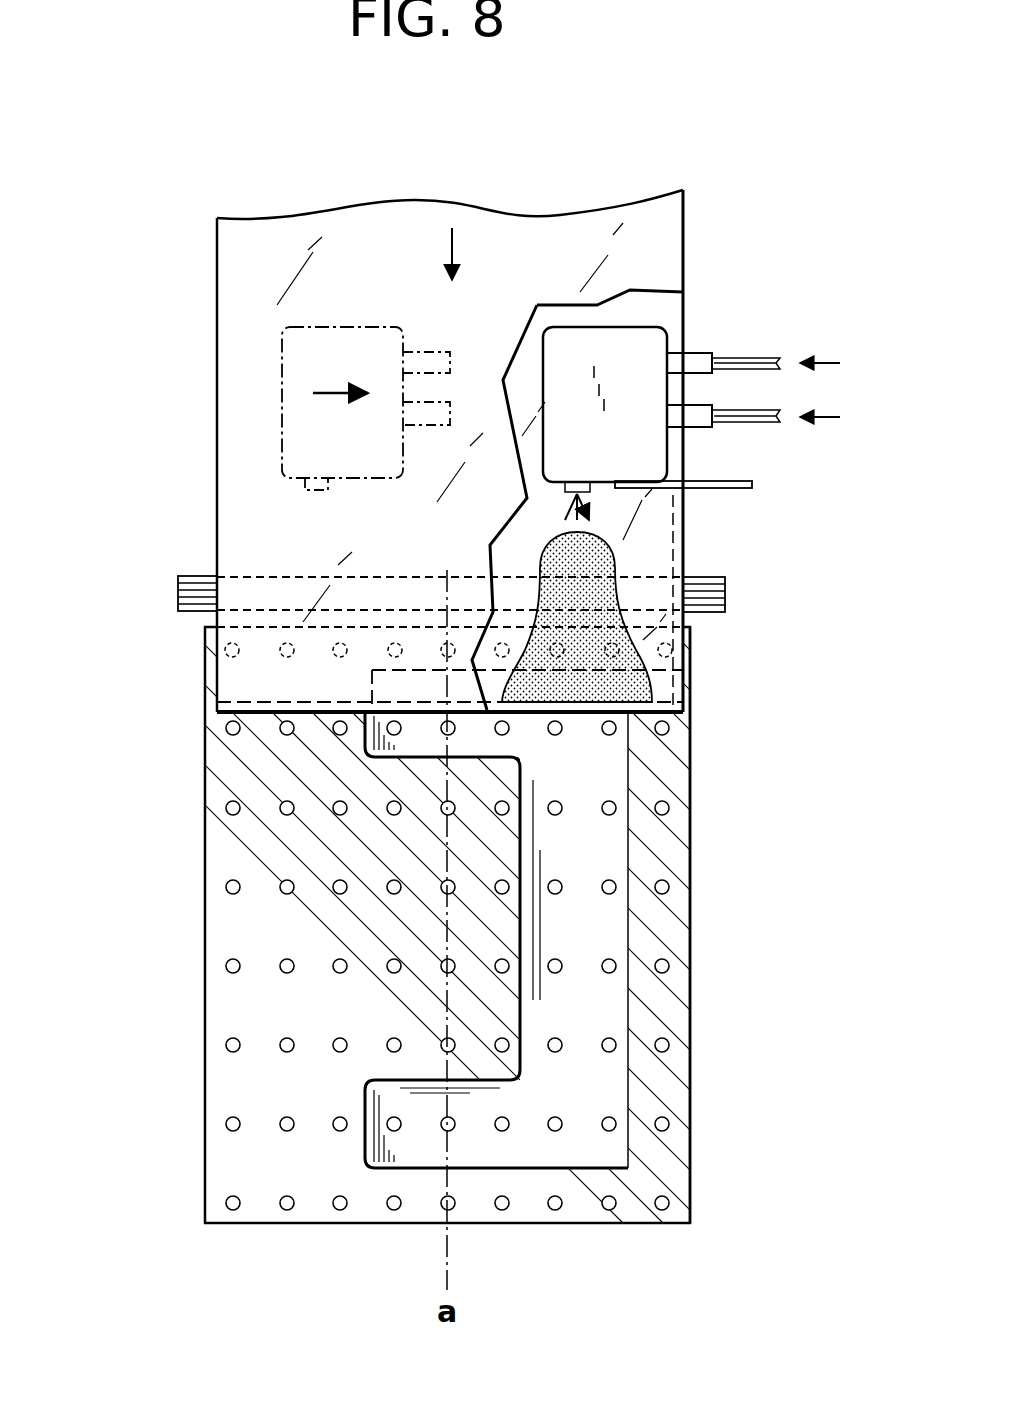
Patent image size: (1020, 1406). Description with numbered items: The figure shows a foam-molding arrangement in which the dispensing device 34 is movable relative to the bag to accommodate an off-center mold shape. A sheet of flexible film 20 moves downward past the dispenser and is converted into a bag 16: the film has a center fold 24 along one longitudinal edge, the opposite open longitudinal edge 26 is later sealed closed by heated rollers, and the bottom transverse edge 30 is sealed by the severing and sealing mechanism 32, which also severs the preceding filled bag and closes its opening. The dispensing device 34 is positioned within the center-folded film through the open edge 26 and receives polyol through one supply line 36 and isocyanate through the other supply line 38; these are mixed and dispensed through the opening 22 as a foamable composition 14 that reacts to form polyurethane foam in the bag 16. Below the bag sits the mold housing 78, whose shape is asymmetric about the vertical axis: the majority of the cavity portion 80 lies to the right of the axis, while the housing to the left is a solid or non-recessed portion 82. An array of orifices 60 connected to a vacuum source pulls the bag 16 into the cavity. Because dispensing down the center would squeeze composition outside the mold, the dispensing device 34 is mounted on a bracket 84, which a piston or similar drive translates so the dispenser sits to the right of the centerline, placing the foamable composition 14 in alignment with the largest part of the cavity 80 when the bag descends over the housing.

The foamable composition 14 is at (568, 556).
The flexible bag 16 is at (215, 668).
The flexible film 20 is at (233, 347).
The opening 22 is at (402, 548).
The center fold 24 is at (215, 434).
The open longitudinal edge 26 is at (683, 248).
The bottom transverse edge 30 is at (262, 712).
The severing and sealing mechanism 32 is at (725, 596).
The dispensing device 34 is at (580, 345).
The supply line 36 is at (745, 358).
The supply line 38 is at (752, 425).
The orifices 60 is at (233, 1127).
The mold housing 78 is at (695, 1107).
The cavity portion 80 is at (600, 851).
The solid or non-recessed portion 82 is at (262, 913).
The bracket 84 is at (718, 490).